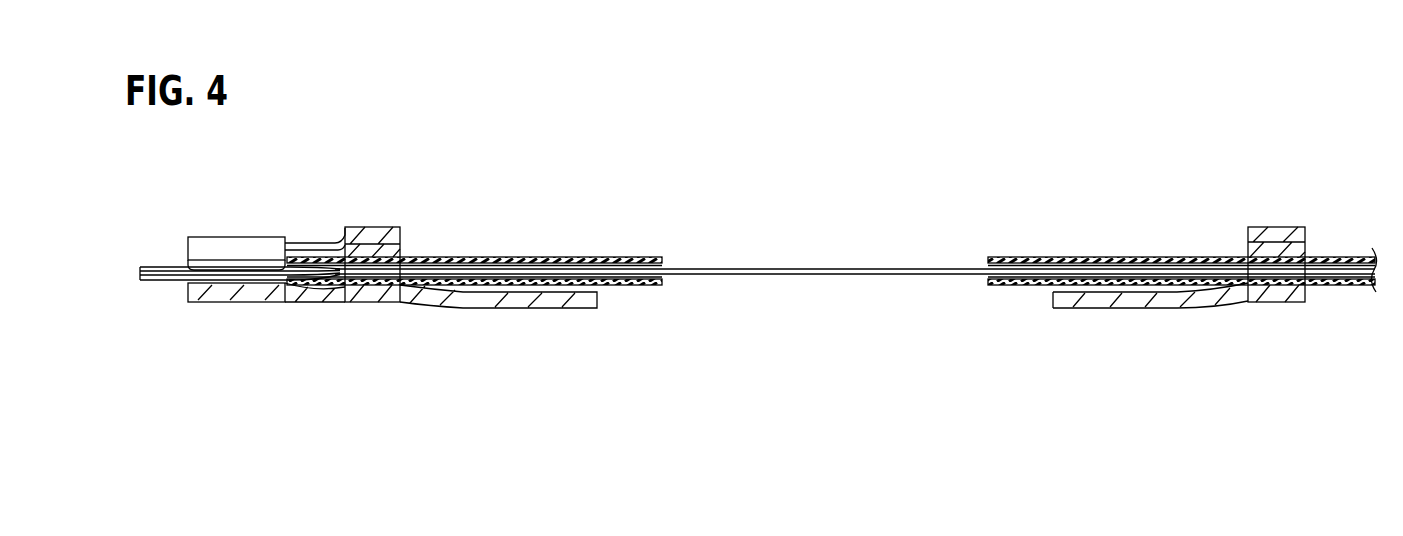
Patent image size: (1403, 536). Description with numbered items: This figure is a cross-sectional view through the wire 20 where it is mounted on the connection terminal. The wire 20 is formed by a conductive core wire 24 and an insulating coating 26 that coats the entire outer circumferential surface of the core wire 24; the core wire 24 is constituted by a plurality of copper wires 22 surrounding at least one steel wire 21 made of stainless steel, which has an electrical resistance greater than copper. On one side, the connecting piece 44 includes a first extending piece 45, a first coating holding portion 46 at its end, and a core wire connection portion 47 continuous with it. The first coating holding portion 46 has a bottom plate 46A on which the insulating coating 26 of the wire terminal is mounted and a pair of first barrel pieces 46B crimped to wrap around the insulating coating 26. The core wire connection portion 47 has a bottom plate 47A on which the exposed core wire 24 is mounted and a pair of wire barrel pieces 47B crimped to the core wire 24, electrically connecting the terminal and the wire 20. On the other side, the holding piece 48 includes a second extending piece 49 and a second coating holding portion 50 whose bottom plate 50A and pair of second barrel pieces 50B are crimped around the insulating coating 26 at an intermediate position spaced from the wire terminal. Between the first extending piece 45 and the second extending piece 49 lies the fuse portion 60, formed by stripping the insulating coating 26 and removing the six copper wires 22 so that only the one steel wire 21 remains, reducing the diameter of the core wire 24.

The wire 20 is at (1343, 247).
The steel wire 21 is at (1038, 273).
The copper wire 22 is at (618, 265).
The core wire 24 is at (160, 277).
The insulating coating 26 is at (545, 258).
The connecting piece 44 is at (518, 302).
The first extending piece 45 is at (441, 326).
The first coating holding portion 46 is at (388, 316).
The bottom plate 46A is at (377, 232).
The first barrel pieces 46B is at (357, 252).
The core wire connection portion 47 is at (266, 317).
The bottom plate 47A is at (290, 363).
The wire barrel pieces 47B is at (256, 255).
The holding piece 48 is at (1100, 303).
The second extending piece 49 is at (1150, 327).
The second coating holding portion 50 is at (1254, 321).
The bottom plate 50A is at (1292, 293).
The second barrel pieces 50B is at (1277, 252).
The fuse portion 60 is at (810, 274).